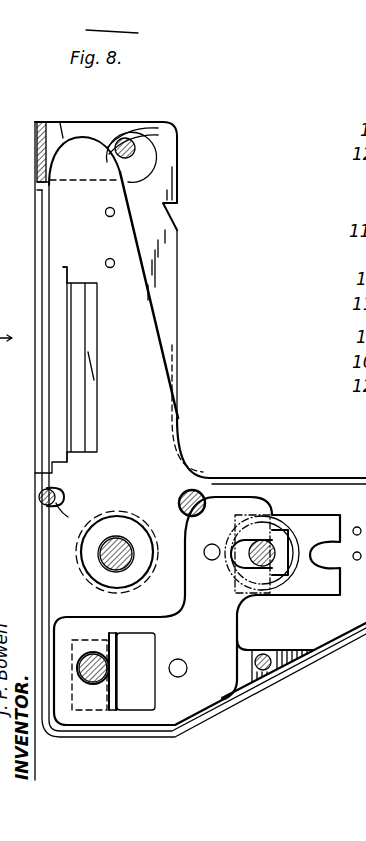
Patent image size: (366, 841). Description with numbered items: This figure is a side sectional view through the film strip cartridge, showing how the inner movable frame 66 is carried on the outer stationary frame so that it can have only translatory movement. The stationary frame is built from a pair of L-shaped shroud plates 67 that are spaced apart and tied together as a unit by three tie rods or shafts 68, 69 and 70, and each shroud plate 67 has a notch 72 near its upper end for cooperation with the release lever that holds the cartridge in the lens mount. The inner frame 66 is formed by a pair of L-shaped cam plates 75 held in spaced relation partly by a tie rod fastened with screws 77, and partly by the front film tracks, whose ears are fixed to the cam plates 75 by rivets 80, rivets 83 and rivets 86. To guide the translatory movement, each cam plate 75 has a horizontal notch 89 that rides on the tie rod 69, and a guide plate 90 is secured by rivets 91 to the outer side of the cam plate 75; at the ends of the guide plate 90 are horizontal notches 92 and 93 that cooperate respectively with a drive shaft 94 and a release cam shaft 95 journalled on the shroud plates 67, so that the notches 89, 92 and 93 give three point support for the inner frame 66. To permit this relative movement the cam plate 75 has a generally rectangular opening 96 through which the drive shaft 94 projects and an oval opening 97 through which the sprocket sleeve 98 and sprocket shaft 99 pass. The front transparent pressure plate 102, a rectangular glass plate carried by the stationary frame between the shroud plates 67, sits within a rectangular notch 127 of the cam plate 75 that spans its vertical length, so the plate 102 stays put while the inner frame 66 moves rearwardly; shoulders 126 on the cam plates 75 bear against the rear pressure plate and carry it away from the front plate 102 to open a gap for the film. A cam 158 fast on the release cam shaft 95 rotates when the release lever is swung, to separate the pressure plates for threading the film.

The inner movable frame 66 is at (212, 403).
The shroud plate 67 is at (166, 266).
The tie rod 68 is at (140, 148).
The tie rod 69 is at (57, 490).
The tie rod 70 is at (265, 671).
The notch 72 is at (179, 208).
The cam plate 75 is at (150, 357).
The screw 77 is at (200, 492).
The rivet 80 is at (113, 260).
The rivet 83 is at (139, 478).
The rivet 86 is at (360, 553).
The horizontal notch 89 is at (69, 516).
The guide plate 90 is at (213, 693).
The rivet 91 is at (179, 658).
The horizontal notch 92 is at (238, 586).
The horizontal notch 93 is at (84, 653).
The drive shaft 94 is at (266, 548).
The release cam shaft 95 is at (94, 684).
The rectangular opening 96 is at (312, 520).
The oval opening 97 is at (145, 531).
The sprocket sleeve 98 is at (133, 560).
The sprocket shaft 99 is at (117, 561).
The front transparent pressure plate 102 is at (80, 393).
The shoulder 126 is at (65, 263).
The rectangular notch 127 is at (91, 342).
The cam 158 is at (122, 680).